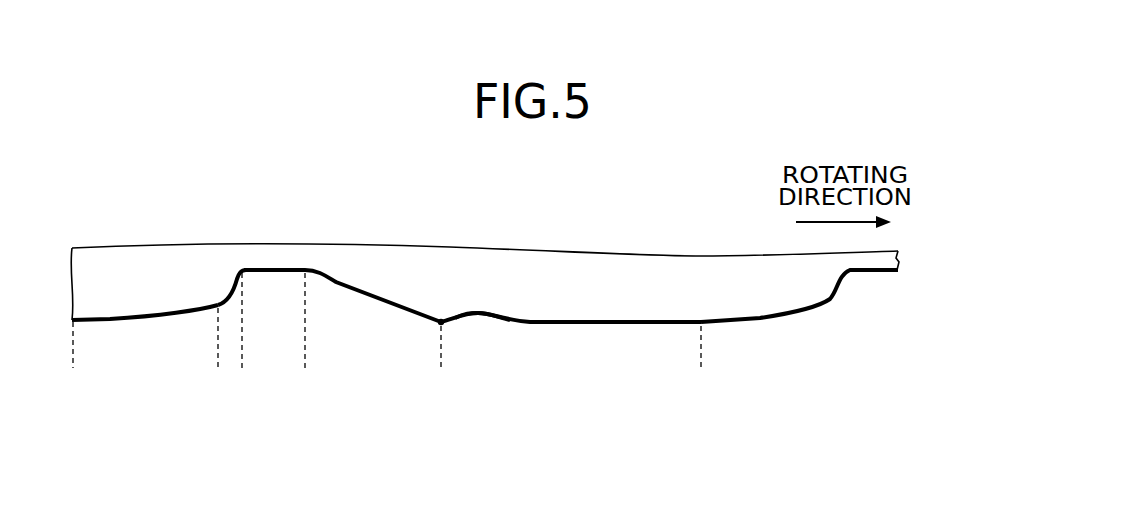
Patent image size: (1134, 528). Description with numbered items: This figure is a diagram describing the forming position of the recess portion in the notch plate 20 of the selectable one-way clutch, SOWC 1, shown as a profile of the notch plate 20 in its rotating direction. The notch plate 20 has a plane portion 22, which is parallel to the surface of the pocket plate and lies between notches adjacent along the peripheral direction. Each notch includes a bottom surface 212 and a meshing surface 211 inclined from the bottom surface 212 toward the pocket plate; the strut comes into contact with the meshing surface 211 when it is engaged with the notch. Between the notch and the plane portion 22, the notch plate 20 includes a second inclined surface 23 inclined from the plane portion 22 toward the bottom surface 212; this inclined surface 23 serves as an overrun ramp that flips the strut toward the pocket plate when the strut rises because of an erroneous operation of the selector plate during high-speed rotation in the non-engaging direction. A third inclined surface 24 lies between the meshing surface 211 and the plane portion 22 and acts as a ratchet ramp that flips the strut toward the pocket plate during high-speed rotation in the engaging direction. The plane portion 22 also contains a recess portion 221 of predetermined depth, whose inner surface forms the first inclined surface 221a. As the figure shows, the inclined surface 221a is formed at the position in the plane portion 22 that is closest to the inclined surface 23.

The selectable one-way clutch (SOWC) 1 is at (133, 216).
The notch plate 20 is at (918, 255).
The plane portion 22 is at (701, 365).
The inclined surface (second inclined surface) 23 is at (441, 365).
The inclined surface (third inclined surface) 24 is at (72, 365).
The meshing surface 211 is at (242, 365).
The bottom surface 212 is at (242, 365).
The recess portion 221 is at (478, 314).
The inclined surface (first inclined surface) 221a is at (463, 316).